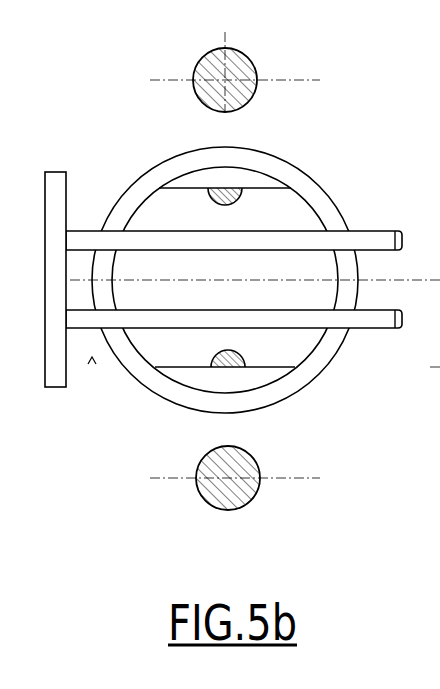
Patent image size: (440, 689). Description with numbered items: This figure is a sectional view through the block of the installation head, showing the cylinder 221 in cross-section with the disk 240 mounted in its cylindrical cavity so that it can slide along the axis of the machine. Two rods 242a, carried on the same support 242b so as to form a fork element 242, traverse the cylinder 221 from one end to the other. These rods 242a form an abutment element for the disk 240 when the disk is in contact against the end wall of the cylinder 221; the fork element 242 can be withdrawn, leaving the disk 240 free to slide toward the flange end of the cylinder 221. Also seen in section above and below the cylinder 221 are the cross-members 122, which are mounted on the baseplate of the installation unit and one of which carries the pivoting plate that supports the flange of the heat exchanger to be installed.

The cross-members 122 is at (251, 57).
The disk 240 is at (225, 281).
The cylinder 221 is at (270, 266).
The fork element 242 is at (234, 334).
The rods 242a is at (384, 319).
The support 242b is at (67, 308).